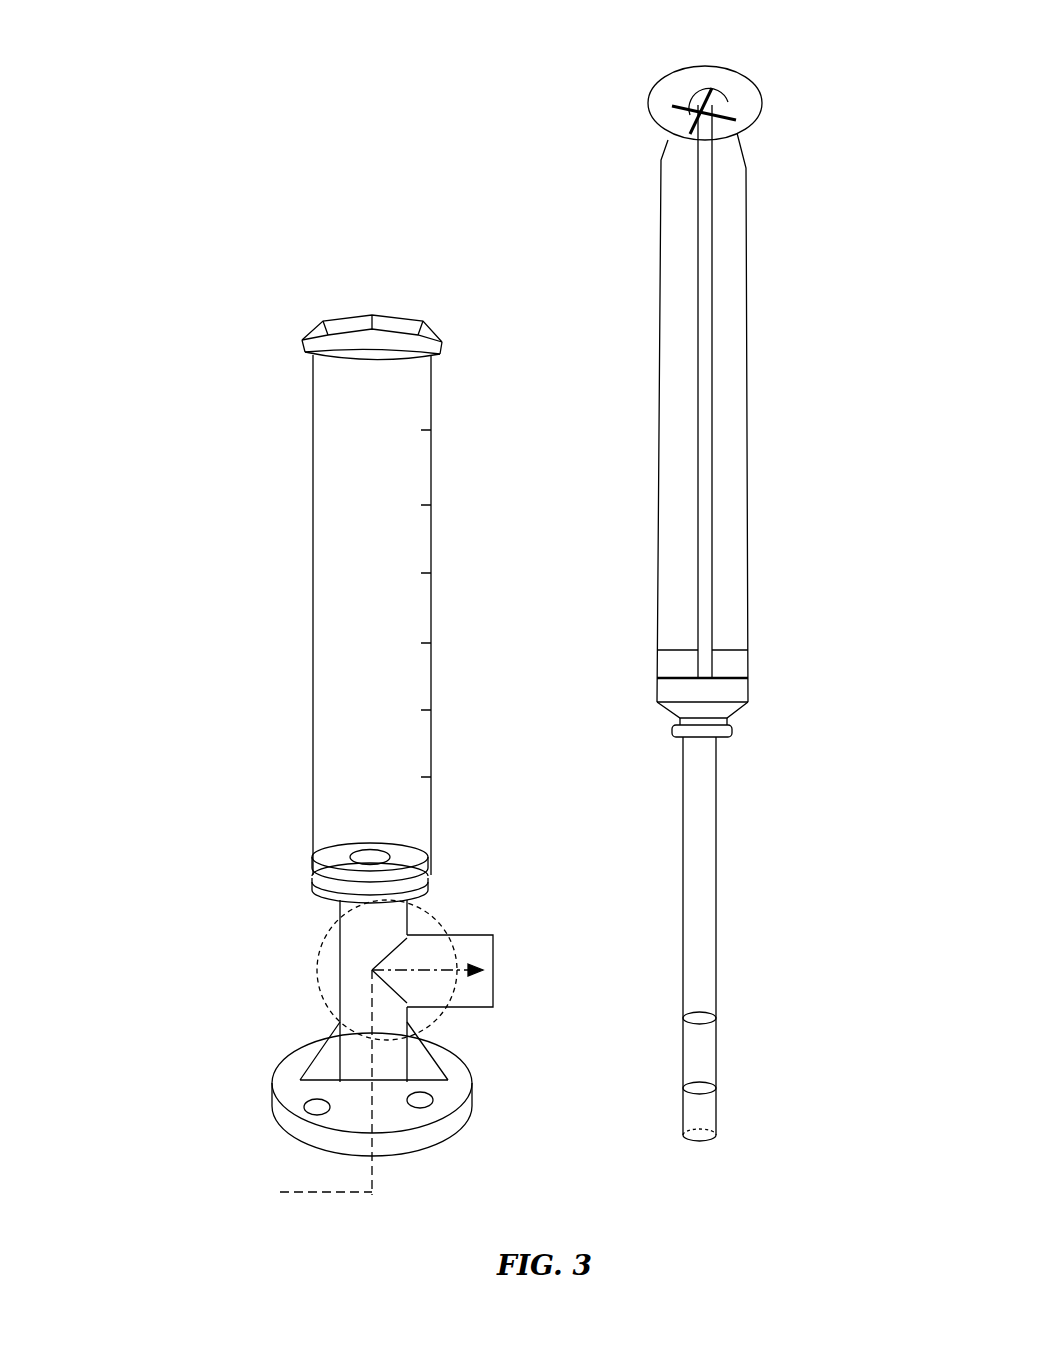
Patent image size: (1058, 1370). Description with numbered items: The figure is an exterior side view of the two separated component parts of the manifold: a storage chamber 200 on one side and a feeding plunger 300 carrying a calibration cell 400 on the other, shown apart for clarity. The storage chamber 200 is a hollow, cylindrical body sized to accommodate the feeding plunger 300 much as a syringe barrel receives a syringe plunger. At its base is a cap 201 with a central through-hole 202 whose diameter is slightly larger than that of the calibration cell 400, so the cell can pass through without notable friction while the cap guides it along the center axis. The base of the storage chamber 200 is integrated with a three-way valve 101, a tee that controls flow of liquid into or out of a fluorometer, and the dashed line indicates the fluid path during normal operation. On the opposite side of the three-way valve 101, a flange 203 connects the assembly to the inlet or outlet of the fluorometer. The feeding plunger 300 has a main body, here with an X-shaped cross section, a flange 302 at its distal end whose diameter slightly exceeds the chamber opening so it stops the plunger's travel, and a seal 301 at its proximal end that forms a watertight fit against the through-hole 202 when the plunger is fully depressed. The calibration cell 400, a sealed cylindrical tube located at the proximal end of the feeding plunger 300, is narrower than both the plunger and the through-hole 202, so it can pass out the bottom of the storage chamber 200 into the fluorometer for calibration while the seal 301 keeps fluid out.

The three-way valve 101 is at (316, 968).
The storage chamber 200 is at (350, 505).
The cap 201 is at (322, 886).
The central through-hole 202 is at (350, 847).
The flange 203 is at (297, 1092).
The feeding plunger 300 is at (737, 445).
The seal 301 is at (716, 737).
The flange 302 is at (760, 100).
The calibration cell 400 is at (716, 1047).